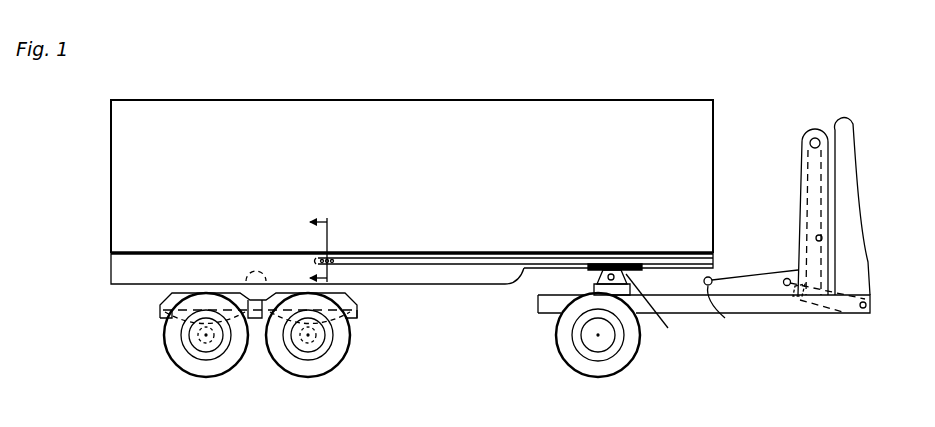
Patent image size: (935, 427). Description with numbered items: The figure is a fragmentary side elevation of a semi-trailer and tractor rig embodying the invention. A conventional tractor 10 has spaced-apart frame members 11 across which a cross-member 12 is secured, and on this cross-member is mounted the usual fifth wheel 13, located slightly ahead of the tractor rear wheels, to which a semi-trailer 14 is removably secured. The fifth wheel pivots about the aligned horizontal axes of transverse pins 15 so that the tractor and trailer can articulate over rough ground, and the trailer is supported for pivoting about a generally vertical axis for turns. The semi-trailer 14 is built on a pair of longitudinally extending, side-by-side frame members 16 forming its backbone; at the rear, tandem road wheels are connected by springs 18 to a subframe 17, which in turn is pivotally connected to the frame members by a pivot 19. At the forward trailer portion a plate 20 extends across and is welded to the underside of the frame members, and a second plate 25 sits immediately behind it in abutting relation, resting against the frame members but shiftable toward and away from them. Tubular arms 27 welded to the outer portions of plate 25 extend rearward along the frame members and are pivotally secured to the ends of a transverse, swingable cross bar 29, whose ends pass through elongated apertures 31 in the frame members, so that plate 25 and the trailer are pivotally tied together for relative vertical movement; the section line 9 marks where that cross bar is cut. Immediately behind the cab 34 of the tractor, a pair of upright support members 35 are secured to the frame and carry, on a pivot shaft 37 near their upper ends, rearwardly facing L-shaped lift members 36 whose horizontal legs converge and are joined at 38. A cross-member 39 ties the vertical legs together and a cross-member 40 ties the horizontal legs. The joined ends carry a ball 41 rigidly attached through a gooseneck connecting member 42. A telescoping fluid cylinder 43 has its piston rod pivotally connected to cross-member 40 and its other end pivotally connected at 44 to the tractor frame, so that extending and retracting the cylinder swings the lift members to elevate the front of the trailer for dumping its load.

The section line 9- 9 is at (310, 250).
The tractor 10 is at (704, 335).
The frame members 11 is at (702, 310).
The cross-member 12 is at (608, 335).
The fifth wheel 13 is at (637, 310).
The semi-trailer 14 is at (473, 285).
The pins 15 is at (598, 285).
The frame members 16 is at (430, 276).
The subframe 17 is at (253, 293).
The springs 18 is at (200, 326).
The pivot 19 is at (252, 282).
The plate 20 is at (681, 272).
The plate 25 is at (622, 270).
The arms 27 is at (402, 262).
The cross bar 29 is at (322, 260).
The elongated apertures 31 is at (316, 262).
The cab 34 is at (851, 124).
The upright support members 35 is at (802, 222).
The L-shaped lift members 36 is at (761, 277).
The pivot shaft 37 is at (816, 138).
The joined ends 38 is at (720, 292).
The cross-member 39 is at (823, 238).
The cross-member 40 is at (786, 287).
The ball 41 is at (703, 282).
The gooseneck connecting member 42 is at (725, 318).
The fluid cylinder 43 is at (847, 310).
The pivotal connection 44 is at (867, 305).